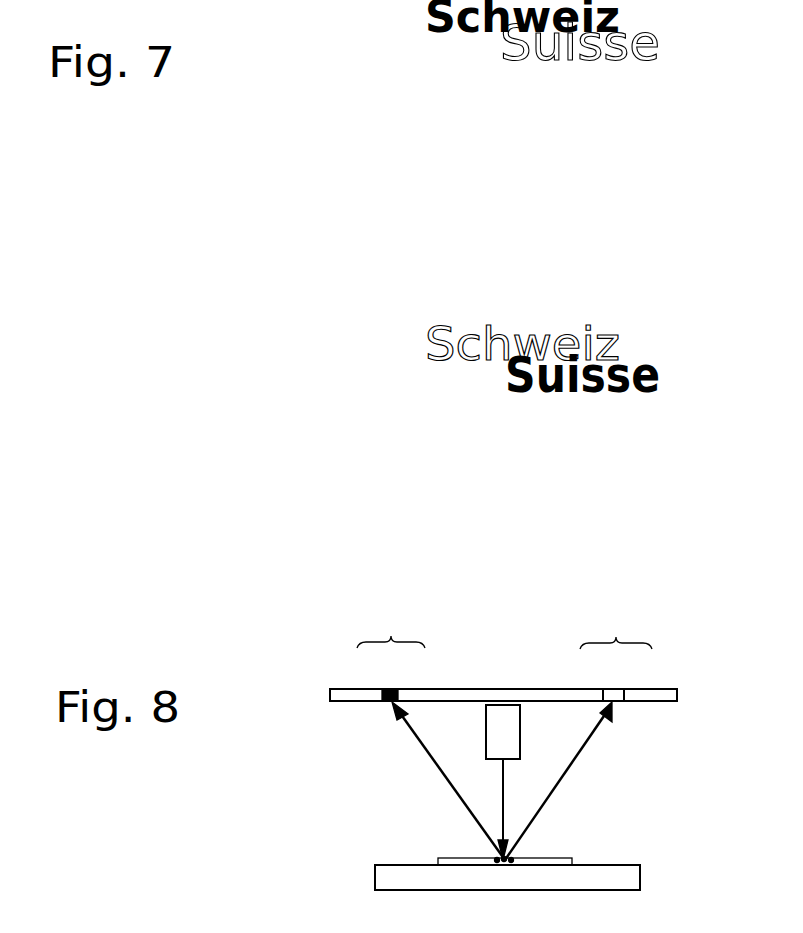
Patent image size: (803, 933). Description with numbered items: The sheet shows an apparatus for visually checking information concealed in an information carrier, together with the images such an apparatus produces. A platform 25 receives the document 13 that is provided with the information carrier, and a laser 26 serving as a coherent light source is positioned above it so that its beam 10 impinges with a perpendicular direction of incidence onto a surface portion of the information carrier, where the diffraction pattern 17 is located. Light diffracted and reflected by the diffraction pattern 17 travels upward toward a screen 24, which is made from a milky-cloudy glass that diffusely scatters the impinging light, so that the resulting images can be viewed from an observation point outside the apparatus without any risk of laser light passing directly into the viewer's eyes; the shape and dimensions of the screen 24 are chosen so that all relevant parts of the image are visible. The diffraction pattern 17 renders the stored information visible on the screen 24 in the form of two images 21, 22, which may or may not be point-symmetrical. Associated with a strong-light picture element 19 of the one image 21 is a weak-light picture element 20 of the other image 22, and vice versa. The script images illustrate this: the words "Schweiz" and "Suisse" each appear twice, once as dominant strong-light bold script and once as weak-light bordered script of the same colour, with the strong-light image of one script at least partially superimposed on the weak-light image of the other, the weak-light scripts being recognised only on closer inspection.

The beam 10 is at (505, 775).
The document 13 is at (573, 858).
The diffraction pattern 17 is at (520, 850).
The strong-light picture element 19 is at (388, 689).
The weak-light picture element 20 is at (611, 689).
The image 21 is at (391, 630).
The image 22 is at (616, 631).
The screen 24 is at (668, 694).
The platform 25 is at (632, 870).
The laser 26 is at (510, 721).